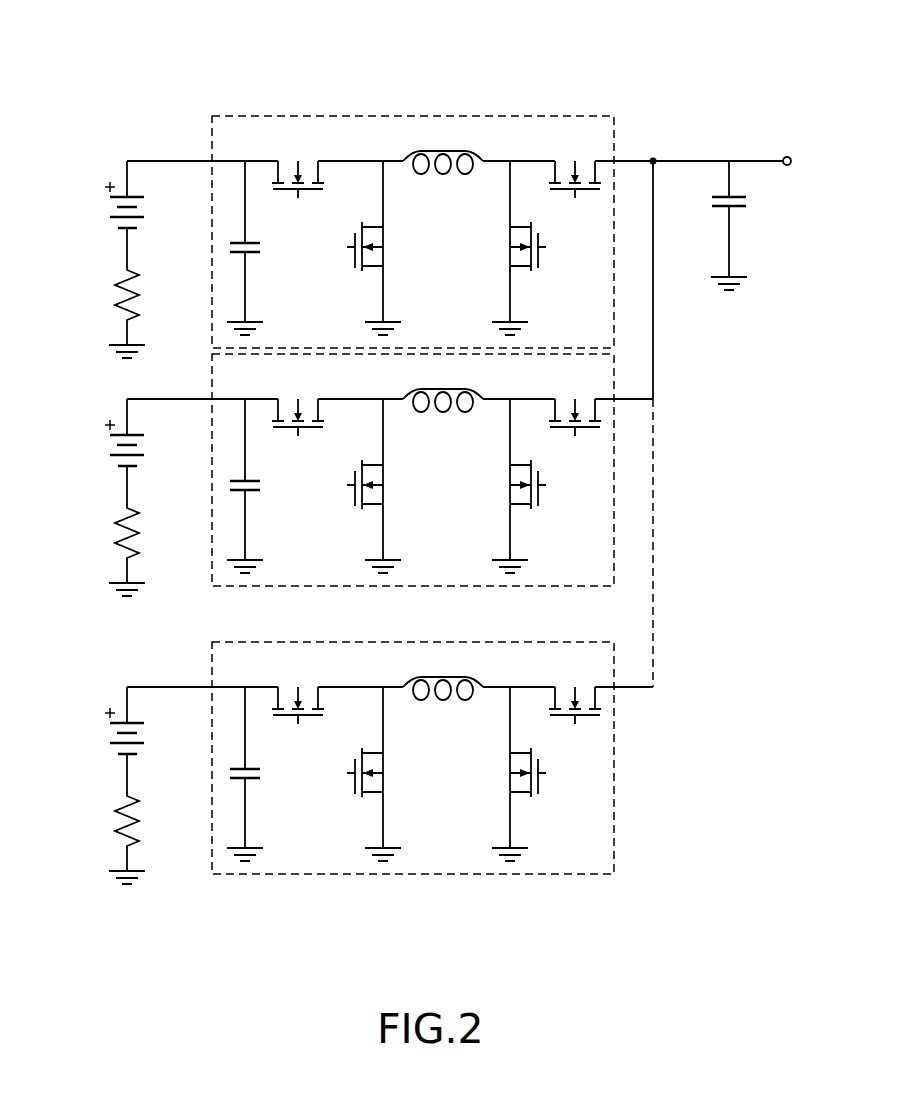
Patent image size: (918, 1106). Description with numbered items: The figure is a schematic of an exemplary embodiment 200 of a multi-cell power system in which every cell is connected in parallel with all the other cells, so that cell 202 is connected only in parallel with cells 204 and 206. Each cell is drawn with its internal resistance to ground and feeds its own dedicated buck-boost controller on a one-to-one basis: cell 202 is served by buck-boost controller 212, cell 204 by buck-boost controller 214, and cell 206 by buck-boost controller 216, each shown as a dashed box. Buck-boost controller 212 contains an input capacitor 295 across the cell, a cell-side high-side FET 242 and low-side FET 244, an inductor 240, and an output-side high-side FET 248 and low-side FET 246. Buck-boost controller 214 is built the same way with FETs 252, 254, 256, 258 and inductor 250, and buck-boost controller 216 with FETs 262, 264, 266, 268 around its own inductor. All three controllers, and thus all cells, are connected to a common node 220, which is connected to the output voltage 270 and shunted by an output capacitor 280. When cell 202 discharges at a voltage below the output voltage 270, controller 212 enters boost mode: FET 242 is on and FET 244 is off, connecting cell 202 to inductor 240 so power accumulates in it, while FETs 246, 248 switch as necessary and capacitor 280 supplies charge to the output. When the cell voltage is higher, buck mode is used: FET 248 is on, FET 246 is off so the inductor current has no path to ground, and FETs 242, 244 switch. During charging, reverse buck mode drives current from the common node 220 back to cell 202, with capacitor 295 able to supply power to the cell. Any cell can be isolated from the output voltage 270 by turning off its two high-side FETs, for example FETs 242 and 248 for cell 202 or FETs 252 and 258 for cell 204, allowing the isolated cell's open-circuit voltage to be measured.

The embodiment 200 is at (142, 85).
The cell 202 is at (112, 217).
The cell 204 is at (118, 497).
The cell 206 is at (120, 785).
The buck-boost controller 212 is at (387, 117).
The buck-boost controller 214 is at (238, 349).
The buck-boost controller 216 is at (403, 785).
The common node 220 is at (654, 160).
The inductor 240 is at (441, 153).
The FET 242 is at (309, 162).
The FET 244 is at (354, 242).
The FET 246 is at (546, 248).
The FET 248 is at (554, 162).
The inductor 250 is at (450, 383).
The FET 252 is at (321, 399).
The FET 254 is at (355, 486).
The FET 256 is at (535, 486).
The FET 258 is at (558, 395).
The FET 262 is at (321, 687).
The FET 264 is at (355, 774).
The FET 266 is at (535, 774).
The FET 268 is at (558, 683).
The output voltage 270 is at (789, 166).
The capacitor 280 is at (745, 207).
The capacitor 295 is at (262, 257).